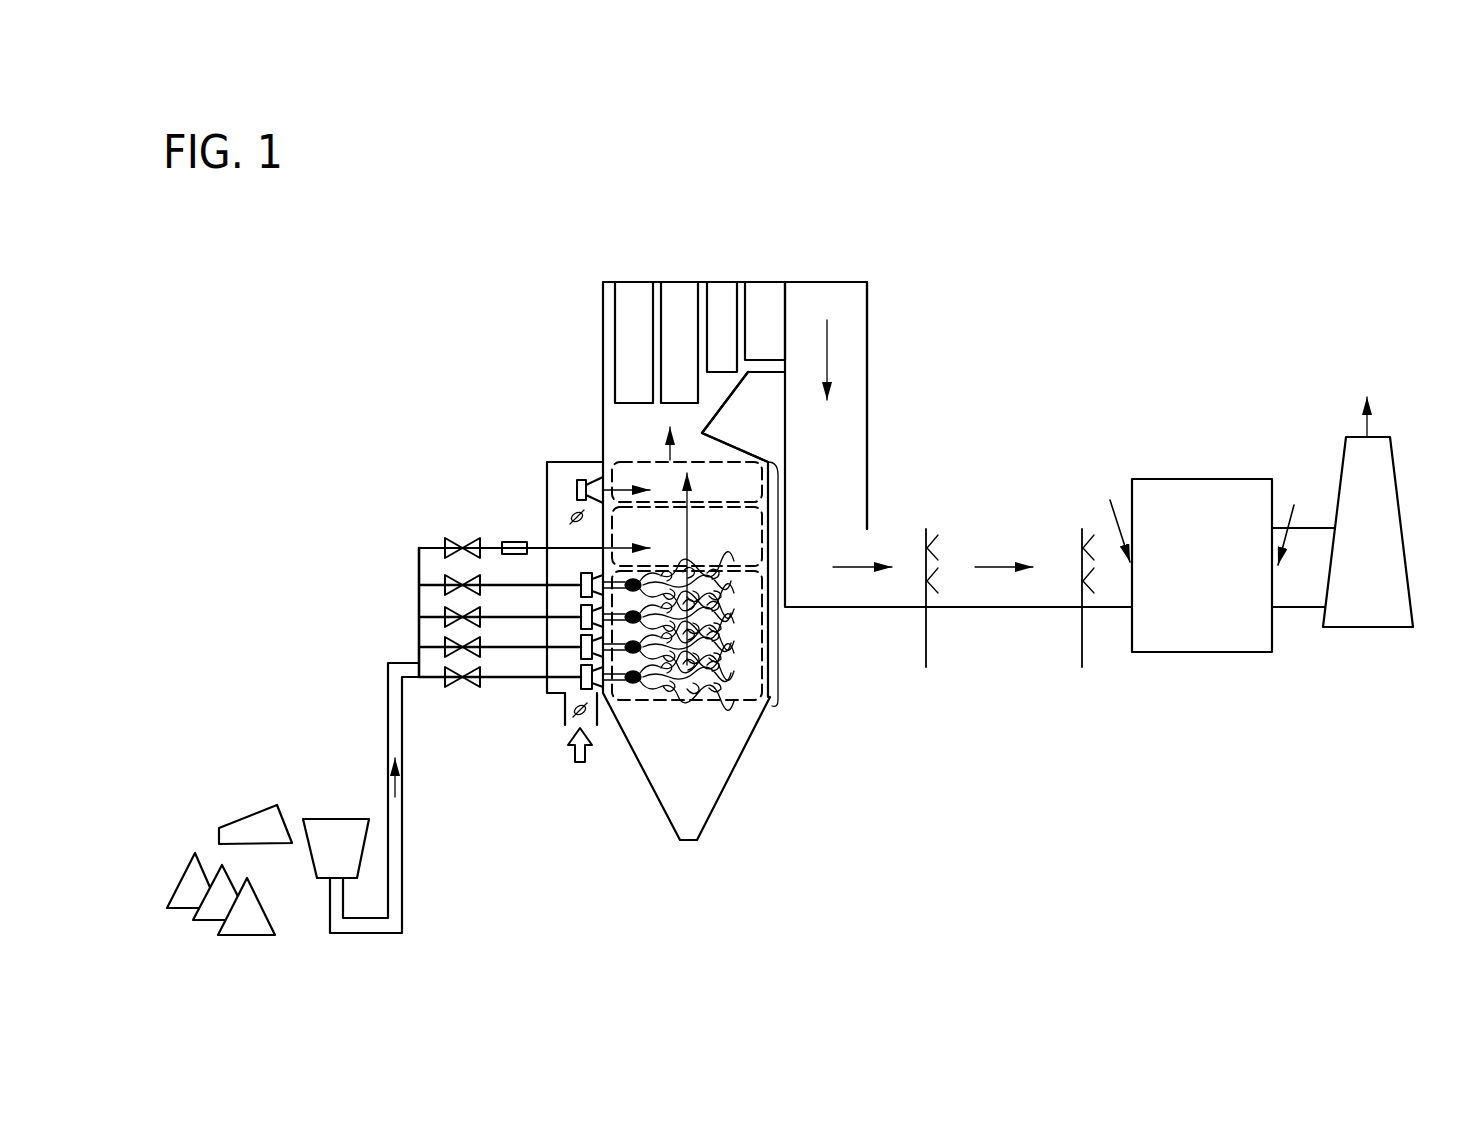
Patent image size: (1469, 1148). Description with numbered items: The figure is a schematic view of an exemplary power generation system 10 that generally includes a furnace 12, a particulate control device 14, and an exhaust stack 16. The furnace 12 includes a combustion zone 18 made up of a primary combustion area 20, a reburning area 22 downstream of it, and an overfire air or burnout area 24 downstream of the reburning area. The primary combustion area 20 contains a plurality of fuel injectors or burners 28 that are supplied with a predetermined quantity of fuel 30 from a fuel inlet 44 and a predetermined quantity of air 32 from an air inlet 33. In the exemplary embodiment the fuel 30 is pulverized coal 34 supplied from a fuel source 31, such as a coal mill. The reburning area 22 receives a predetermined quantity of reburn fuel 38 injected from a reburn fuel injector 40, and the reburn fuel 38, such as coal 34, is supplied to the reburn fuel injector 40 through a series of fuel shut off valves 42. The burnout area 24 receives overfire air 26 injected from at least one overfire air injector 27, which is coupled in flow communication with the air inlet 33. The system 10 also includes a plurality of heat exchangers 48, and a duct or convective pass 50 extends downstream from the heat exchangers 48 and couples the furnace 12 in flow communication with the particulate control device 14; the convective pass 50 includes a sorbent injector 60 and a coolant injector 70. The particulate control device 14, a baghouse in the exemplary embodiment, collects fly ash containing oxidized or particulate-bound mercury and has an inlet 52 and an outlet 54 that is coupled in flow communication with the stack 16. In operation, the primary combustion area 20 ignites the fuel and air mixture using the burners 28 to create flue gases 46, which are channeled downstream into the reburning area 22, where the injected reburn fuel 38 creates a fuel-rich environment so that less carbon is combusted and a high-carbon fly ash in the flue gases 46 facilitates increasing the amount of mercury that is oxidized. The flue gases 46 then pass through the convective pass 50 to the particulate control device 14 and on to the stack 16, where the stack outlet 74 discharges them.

The power generation system 10 is at (400, 278).
The furnace 12 is at (735, 772).
The particulate control device 14 is at (1178, 653).
The exhaust stack 16 is at (1396, 470).
The combustion zone 18 is at (779, 622).
The primary combustion area 20 is at (723, 702).
The reburning area 22 is at (728, 515).
The burnout area 24 is at (614, 462).
The overfire air 26 is at (600, 482).
The overfire air injector 27 is at (577, 487).
The burners 28 is at (581, 574).
The fuel 30 is at (388, 780).
The fuel source 31 is at (190, 860).
The air 32 is at (573, 758).
The air inlet 33 is at (592, 723).
The coal 34 is at (247, 812).
The reburn fuel 38 is at (617, 548).
The reburn fuel injector 40 is at (557, 547).
The fuel shut off valves 42 is at (457, 545).
The fuel inlet 44 is at (350, 818).
The flue gases 46 is at (828, 352).
The heat exchangers 48 is at (630, 292).
The convective pass 50 is at (834, 284).
The inlet 52 is at (1109, 514).
The outlet 54 is at (1295, 517).
The sorbent injector 60 is at (926, 632).
The coolant injector 70 is at (1082, 632).
The stack outlet 74 is at (1358, 437).